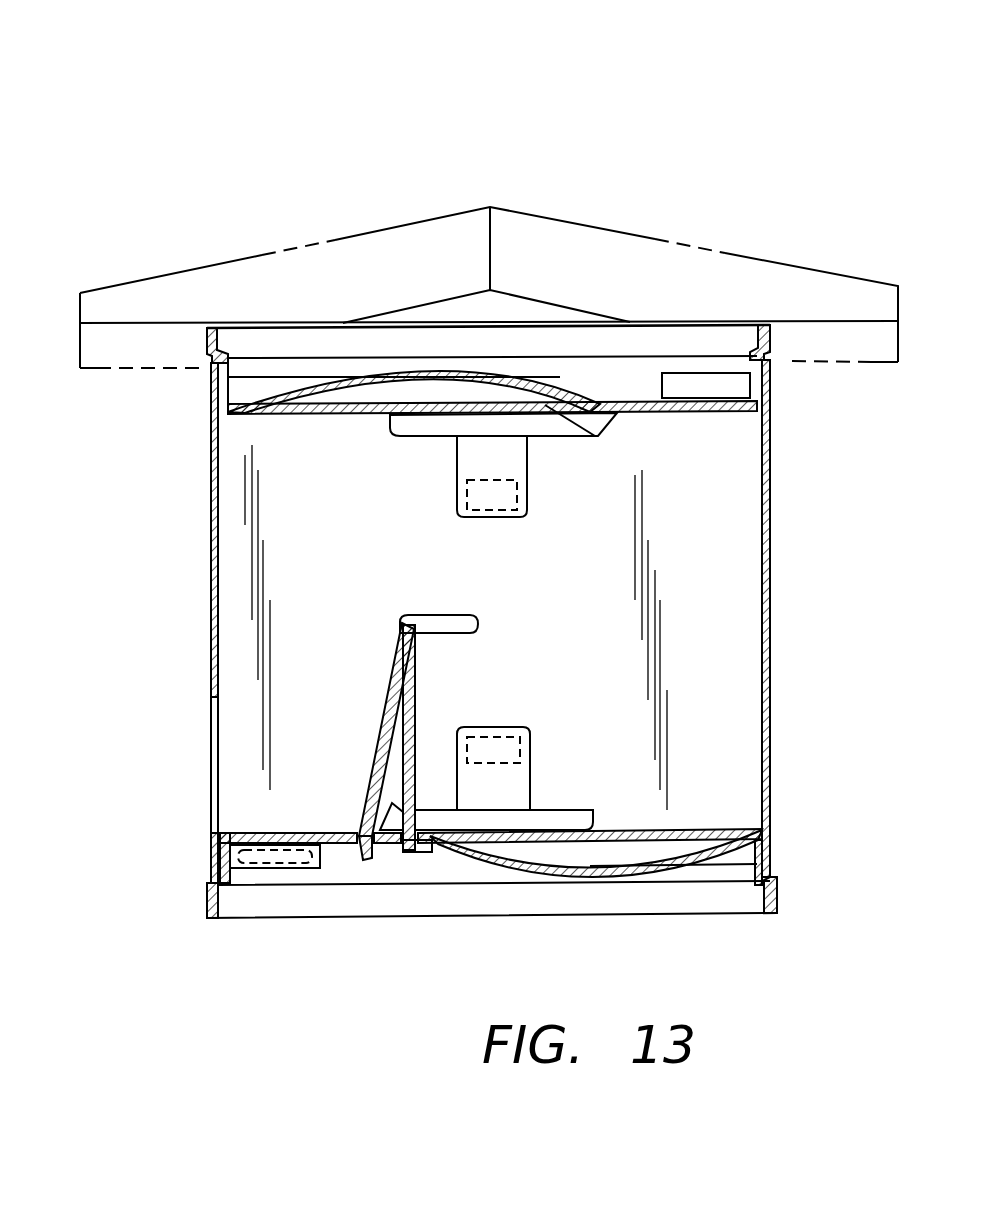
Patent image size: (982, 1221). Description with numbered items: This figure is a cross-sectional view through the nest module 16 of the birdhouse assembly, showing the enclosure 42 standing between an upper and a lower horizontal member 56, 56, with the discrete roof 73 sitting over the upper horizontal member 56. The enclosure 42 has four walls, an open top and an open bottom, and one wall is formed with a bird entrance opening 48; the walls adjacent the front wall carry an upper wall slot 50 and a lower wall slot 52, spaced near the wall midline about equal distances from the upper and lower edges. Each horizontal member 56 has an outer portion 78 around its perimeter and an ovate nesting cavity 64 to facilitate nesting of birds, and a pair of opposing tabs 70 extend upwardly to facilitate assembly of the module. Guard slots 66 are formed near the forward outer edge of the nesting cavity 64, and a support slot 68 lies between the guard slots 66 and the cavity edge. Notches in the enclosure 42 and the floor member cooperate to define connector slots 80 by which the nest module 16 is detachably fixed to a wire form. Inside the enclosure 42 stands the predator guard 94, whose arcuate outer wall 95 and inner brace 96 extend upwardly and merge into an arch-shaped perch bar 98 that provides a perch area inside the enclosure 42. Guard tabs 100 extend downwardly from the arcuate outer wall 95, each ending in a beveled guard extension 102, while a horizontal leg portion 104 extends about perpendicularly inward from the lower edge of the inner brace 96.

The nest module 16 is at (225, 170).
The roof 73 is at (177, 272).
The enclosure 42 is at (210, 514).
The horizontal member 56 is at (708, 418).
The tab 70 is at (467, 455).
The upper wall slot 50 is at (522, 505).
The lower wall slot 52 is at (530, 735).
The perch bar 98 is at (443, 625).
The predator guard 94 is at (392, 679).
The inner brace 96 is at (415, 705).
The arcuate outer wall 95 is at (380, 715).
The bird entrance opening 48 is at (213, 803).
The guard tab 100 is at (360, 823).
The beveled guard extension 102 is at (357, 855).
The guard slot 66 is at (382, 847).
The support slot 68 is at (403, 845).
The horizontal leg portion 104 is at (425, 850).
The nesting cavity 64 is at (698, 845).
The connector slot 80 is at (270, 858).
The outer portion 78 is at (730, 902).